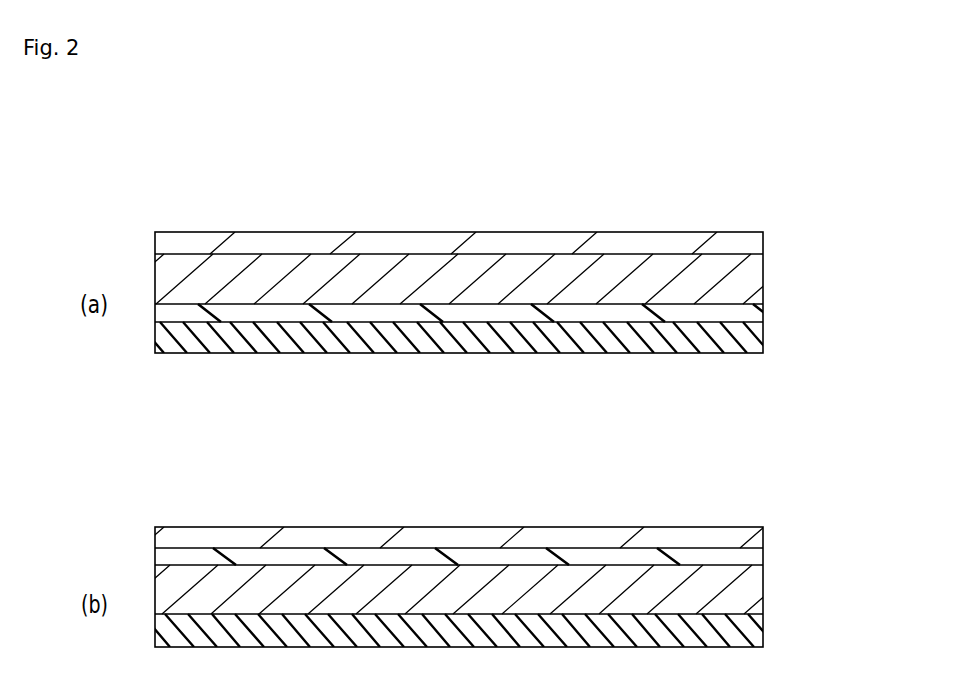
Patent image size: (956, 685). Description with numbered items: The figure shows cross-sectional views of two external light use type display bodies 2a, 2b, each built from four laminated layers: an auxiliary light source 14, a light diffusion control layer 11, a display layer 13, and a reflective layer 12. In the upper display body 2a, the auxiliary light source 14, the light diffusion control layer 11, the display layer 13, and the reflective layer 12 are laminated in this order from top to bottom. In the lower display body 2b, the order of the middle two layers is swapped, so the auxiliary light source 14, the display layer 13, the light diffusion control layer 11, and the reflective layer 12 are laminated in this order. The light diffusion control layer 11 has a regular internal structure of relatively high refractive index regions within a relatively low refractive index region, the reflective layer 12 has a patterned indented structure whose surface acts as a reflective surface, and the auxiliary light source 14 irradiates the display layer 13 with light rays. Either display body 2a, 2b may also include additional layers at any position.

The external light use type display body 2a is at (651, 203).
The external light use type display body 2b is at (651, 490).
The light diffusion control layer 11 is at (747, 280).
The reflective layer 12 is at (747, 340).
The display layer 13 is at (747, 313).
The auxiliary light source 14 is at (747, 243).